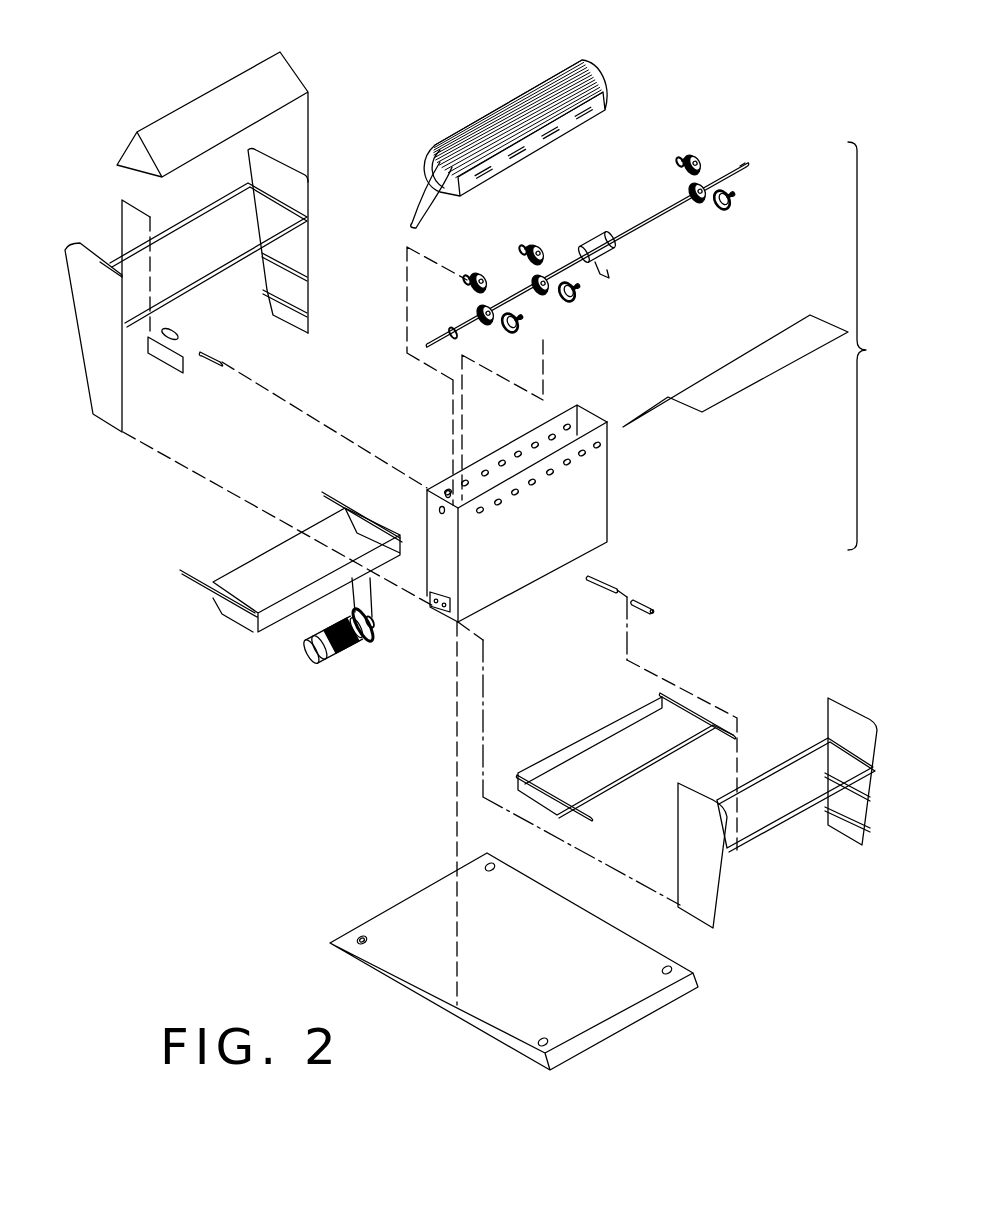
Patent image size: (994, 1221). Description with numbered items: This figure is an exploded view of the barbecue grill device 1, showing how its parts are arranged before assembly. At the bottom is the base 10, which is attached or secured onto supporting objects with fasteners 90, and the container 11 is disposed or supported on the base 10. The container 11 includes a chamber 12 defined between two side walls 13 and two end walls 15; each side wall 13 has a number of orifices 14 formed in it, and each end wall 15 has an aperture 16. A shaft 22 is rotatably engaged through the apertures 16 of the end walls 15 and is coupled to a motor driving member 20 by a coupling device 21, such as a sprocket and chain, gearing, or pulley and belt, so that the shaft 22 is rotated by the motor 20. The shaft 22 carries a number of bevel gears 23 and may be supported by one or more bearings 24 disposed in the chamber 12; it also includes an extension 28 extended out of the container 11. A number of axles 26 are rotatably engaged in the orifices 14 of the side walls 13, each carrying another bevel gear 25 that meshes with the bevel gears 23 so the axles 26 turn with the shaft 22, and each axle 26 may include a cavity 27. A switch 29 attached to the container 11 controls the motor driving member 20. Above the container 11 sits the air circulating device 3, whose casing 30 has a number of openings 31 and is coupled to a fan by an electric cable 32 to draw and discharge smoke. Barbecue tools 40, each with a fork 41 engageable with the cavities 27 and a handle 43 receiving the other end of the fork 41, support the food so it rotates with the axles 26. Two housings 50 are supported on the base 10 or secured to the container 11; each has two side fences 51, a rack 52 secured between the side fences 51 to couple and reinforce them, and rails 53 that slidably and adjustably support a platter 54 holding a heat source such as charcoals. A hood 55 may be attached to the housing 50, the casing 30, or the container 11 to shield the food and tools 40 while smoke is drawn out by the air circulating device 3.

The barbecue grill device 1 is at (777, 212).
The air circulating device 3 is at (563, 67).
The base 10 is at (433, 985).
The container 11 is at (607, 498).
The chamber 12 is at (580, 423).
The side walls 13 is at (600, 480).
The orifices 14 is at (570, 462).
The end walls 15 is at (400, 535).
The aperture 16 is at (427, 540).
The motor driving member 20 is at (350, 660).
The coupling device 21 is at (374, 603).
The shaft 22 is at (647, 223).
The bevel gears 23 is at (487, 330).
The bearings 24 is at (594, 243).
The bevel gear 25 is at (522, 315).
The axles 26 is at (507, 317).
The cavity 27 is at (525, 330).
The extension 28 is at (735, 165).
The switch 29 is at (442, 614).
The casing 30 is at (517, 95).
The openings 31 is at (587, 110).
The electric cable 32 is at (423, 205).
The barbecue tools 40 is at (632, 596).
The fork 41 is at (597, 587).
The handle 43 is at (655, 609).
The housings 50 is at (92, 248).
The side fences 51 is at (707, 887).
The rack 52 is at (785, 822).
The rails 53 is at (853, 828).
The platter 54 is at (597, 743).
The hood 55 is at (775, 337).
The fasteners 90 is at (358, 937).